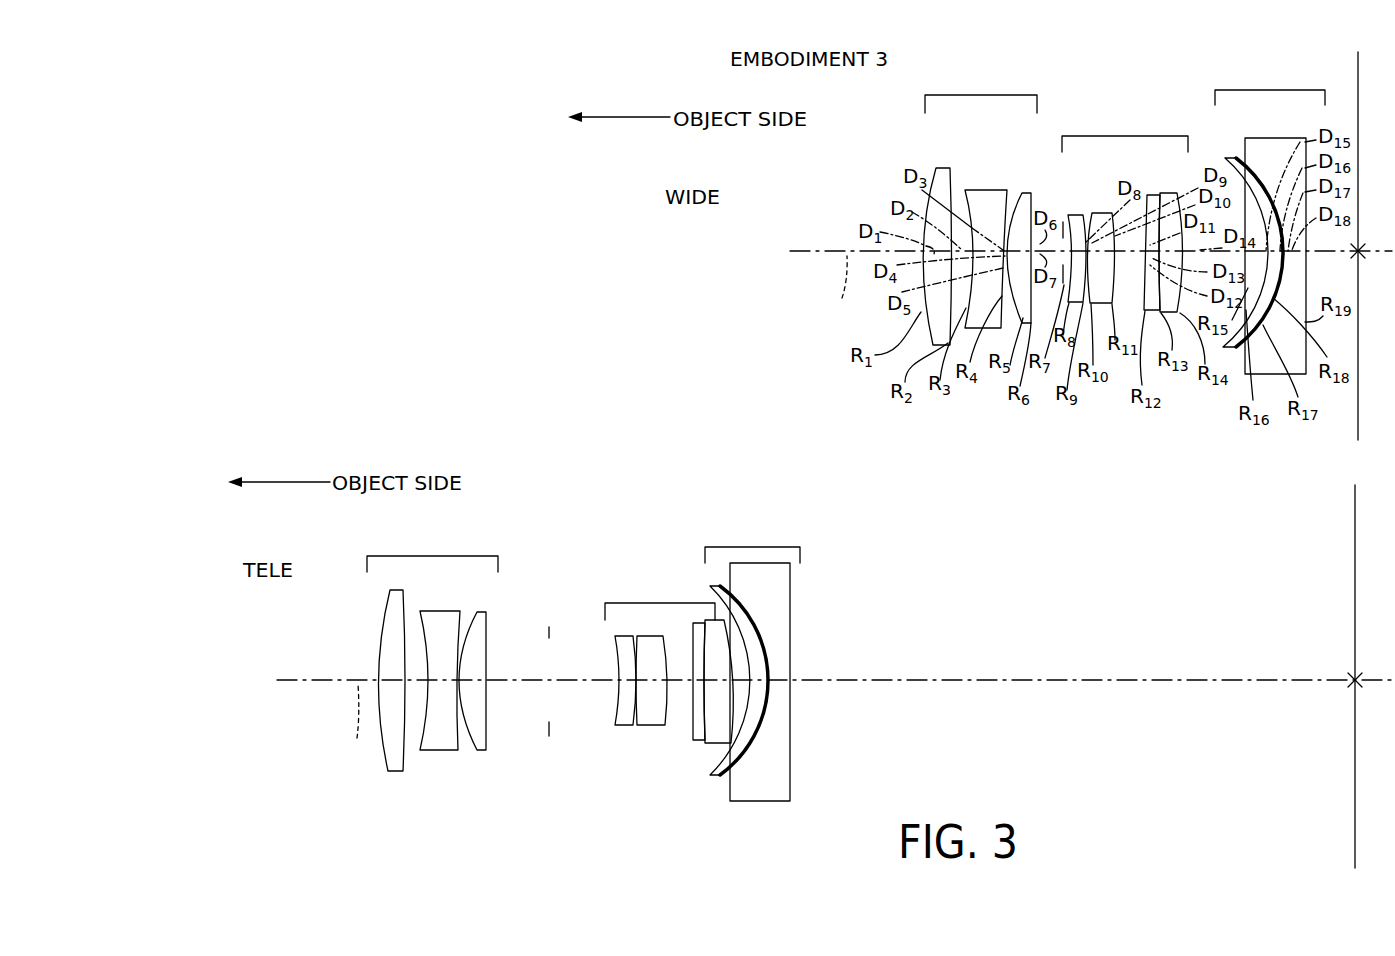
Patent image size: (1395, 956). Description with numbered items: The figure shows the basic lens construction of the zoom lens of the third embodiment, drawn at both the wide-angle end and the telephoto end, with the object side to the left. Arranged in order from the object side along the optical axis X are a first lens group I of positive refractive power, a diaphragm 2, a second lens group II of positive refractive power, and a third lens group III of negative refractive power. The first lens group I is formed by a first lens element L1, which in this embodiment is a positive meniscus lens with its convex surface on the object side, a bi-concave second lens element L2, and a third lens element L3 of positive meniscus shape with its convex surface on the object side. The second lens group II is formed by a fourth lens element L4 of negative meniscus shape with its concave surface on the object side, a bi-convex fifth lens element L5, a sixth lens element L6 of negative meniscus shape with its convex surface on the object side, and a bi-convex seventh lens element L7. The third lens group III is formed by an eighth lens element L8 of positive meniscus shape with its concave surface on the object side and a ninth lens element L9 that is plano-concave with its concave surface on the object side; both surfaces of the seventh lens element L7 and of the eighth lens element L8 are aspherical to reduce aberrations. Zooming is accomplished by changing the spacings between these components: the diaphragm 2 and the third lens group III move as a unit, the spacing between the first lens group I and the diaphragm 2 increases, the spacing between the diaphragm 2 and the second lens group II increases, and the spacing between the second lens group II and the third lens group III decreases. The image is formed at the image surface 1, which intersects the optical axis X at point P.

The image surface 1 is at (1350, 64).
The diaphragm 2 is at (1063, 222).
The point P is at (1356, 255).
The optical axis X is at (599, 503).
The first lens group I is at (702, 320).
The second lens group II is at (896, 360).
The third lens group III is at (1015, 308).
The first lens element L1 is at (942, 168).
The second lens element L2 is at (985, 190).
The third lens element L3 is at (1031, 193).
The fourth lens element L4 is at (1075, 215).
The fifth lens element L5 is at (1102, 213).
The sixth lens element L6 is at (1152, 195).
The seventh lens element L7 is at (1170, 193).
The eighth lens element L8 is at (1230, 158).
The ninth lens element L9 is at (1290, 138).